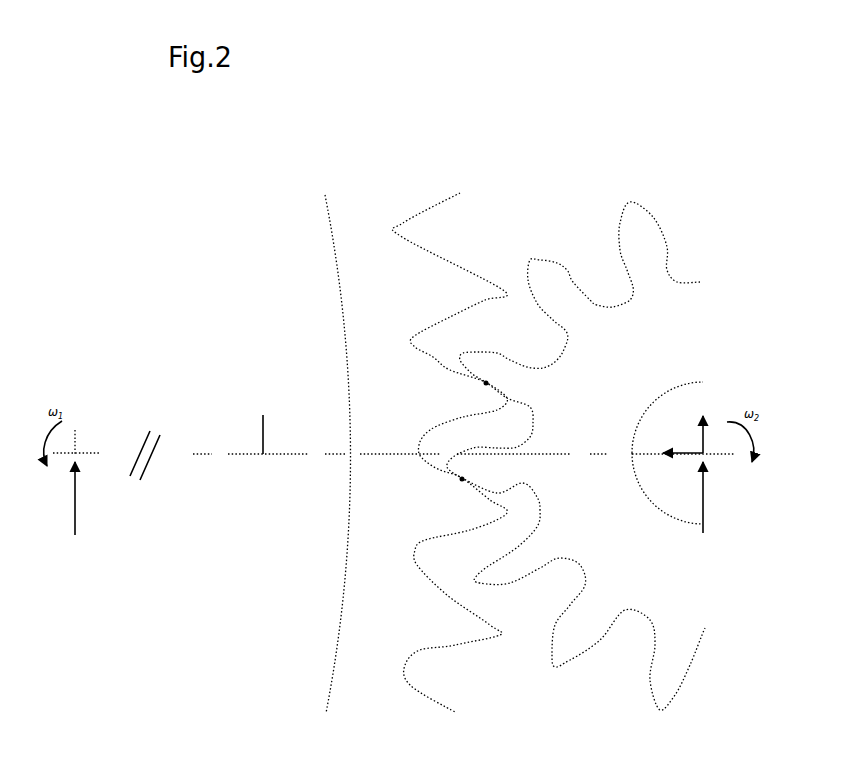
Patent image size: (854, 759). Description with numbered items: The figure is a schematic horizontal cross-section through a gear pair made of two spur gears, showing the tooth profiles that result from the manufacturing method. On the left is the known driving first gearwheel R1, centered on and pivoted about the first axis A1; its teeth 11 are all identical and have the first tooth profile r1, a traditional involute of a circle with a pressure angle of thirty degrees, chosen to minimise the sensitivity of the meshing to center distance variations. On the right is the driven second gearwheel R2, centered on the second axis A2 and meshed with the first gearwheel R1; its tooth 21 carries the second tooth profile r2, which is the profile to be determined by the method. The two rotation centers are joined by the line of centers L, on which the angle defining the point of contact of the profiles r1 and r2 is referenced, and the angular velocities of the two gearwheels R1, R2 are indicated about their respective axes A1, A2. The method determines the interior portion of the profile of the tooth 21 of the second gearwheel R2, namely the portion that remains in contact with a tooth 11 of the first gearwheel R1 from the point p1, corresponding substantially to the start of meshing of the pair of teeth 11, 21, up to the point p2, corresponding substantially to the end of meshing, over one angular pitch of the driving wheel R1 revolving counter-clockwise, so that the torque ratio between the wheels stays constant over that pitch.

The first gearwheel R1 is at (355, 280).
The second gearwheel R2 is at (668, 337).
The tooth of the first gearwheel 11 is at (443, 280).
The tooth of the second gearwheel 21 is at (505, 370).
The first axis A1 is at (79, 510).
The second axis A2 is at (687, 482).
The line of centers L is at (261, 426).
The start-of-meshing point p1 is at (460, 481).
The end-of-meshing point p2 is at (484, 385).
The first tooth profile r1 is at (447, 374).
The second tooth profile r2 is at (479, 363).